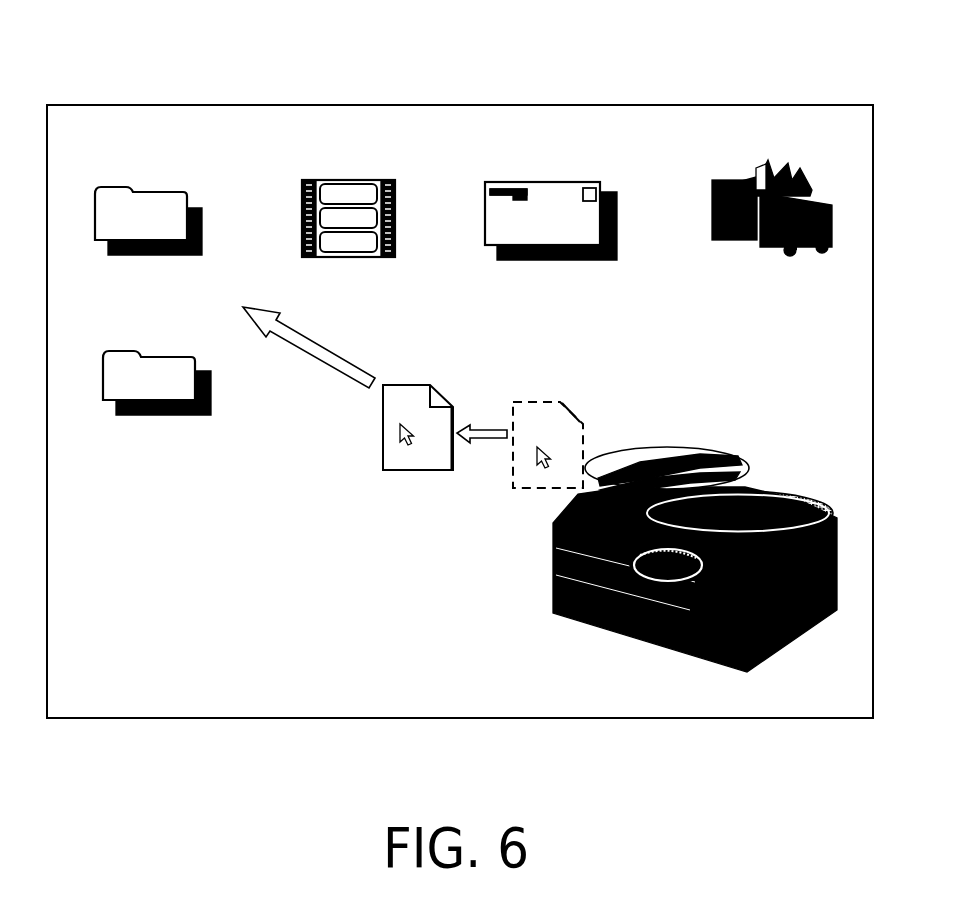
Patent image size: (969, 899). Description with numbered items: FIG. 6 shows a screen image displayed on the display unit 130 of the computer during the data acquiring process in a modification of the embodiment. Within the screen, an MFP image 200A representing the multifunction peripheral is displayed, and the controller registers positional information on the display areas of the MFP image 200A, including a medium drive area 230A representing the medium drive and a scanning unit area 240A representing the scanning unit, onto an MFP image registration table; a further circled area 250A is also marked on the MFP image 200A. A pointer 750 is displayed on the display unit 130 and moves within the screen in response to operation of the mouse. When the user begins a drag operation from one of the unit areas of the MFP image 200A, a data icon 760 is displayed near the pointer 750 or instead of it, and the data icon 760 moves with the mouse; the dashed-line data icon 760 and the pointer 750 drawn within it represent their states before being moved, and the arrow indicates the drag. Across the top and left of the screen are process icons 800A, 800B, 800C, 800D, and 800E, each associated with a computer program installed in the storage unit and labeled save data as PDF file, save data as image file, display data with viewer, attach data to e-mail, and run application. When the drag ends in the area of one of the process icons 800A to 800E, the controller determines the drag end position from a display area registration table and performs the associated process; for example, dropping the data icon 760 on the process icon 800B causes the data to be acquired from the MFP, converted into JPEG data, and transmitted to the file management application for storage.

The display unit 130 is at (470, 78).
The process icon 800A is at (211, 397).
The process icon 800B is at (150, 192).
The process icon 800C is at (348, 180).
The process icon 800D is at (542, 182).
The process icon 800E is at (727, 173).
The pointer 750 is at (413, 448).
The data icon 760 is at (395, 470).
The MFP image 200A is at (747, 672).
The medium drive area 230A is at (650, 585).
The scanning unit area 240A is at (770, 490).
The flash unit 250A is at (668, 447).